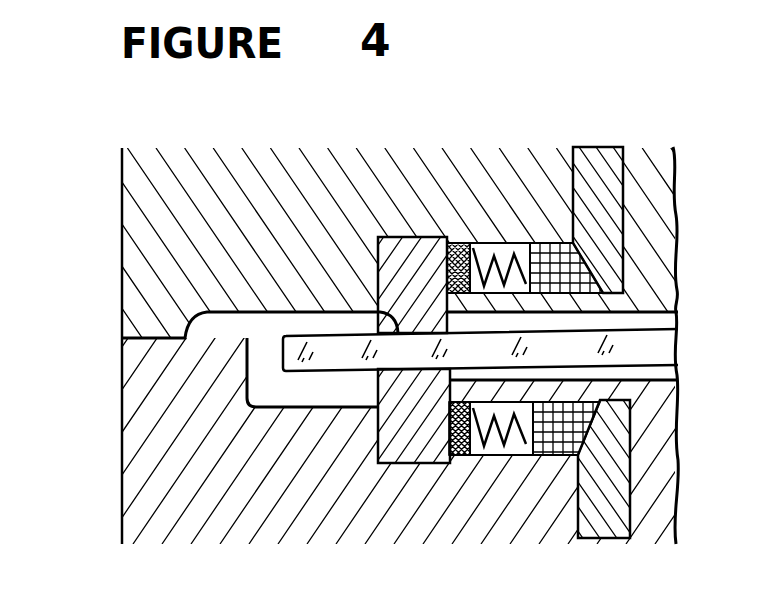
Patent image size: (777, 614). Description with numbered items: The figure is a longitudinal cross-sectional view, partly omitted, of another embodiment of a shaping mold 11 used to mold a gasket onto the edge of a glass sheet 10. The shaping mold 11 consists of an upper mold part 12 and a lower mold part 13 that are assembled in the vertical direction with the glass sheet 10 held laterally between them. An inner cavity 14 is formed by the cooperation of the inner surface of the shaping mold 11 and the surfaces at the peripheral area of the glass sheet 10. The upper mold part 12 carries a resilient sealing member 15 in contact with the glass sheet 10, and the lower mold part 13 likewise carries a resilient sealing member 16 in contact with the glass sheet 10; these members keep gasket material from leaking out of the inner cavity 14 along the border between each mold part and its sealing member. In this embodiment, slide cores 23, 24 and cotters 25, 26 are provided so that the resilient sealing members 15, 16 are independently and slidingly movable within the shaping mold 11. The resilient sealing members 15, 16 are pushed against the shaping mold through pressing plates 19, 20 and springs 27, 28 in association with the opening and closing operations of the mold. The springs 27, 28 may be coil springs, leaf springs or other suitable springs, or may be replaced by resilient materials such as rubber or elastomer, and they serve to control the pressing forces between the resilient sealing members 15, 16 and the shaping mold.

The glass sheet 10 is at (648, 343).
The shaping mold 11 is at (65, 245).
The upper mold part 12 is at (147, 270).
The lower mold part 13 is at (147, 398).
The inner cavity 14 is at (297, 388).
The resilient sealing member 15 is at (400, 262).
The resilient sealing member 16 is at (406, 463).
The pressing plate 19 is at (455, 266).
The pressing plate 20 is at (460, 457).
The slide core 23 is at (548, 248).
The slide core 24 is at (553, 455).
The cotter 25 is at (598, 178).
The cotter 26 is at (600, 517).
The spring 27 is at (500, 262).
The spring 28 is at (517, 455).